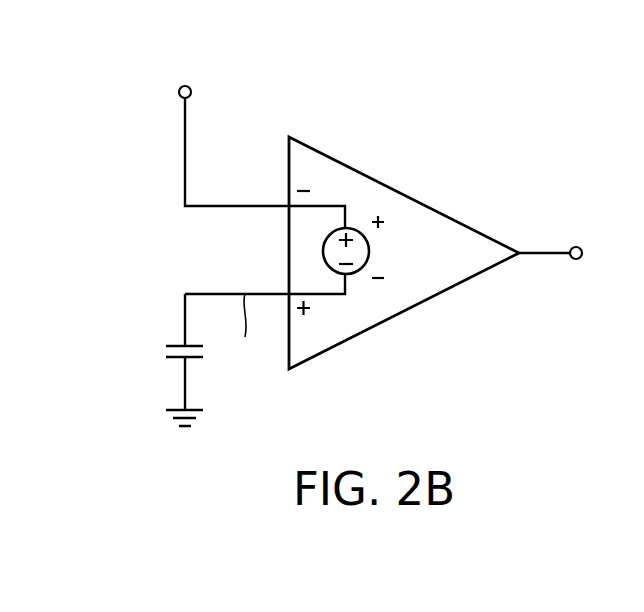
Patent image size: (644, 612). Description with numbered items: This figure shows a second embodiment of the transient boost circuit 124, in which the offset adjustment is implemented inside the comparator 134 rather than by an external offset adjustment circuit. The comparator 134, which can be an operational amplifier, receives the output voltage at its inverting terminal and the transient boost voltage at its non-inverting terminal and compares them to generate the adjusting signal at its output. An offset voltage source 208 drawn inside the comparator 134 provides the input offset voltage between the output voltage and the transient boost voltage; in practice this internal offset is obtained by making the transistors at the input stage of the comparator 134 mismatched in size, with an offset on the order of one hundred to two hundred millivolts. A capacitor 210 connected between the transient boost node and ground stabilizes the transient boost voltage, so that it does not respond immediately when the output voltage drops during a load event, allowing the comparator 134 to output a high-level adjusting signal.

The transient boost circuit 124 is at (542, 36).
The comparator 134 is at (403, 192).
The offset voltage source 208 is at (323, 249).
The capacitor 210 is at (166, 348).